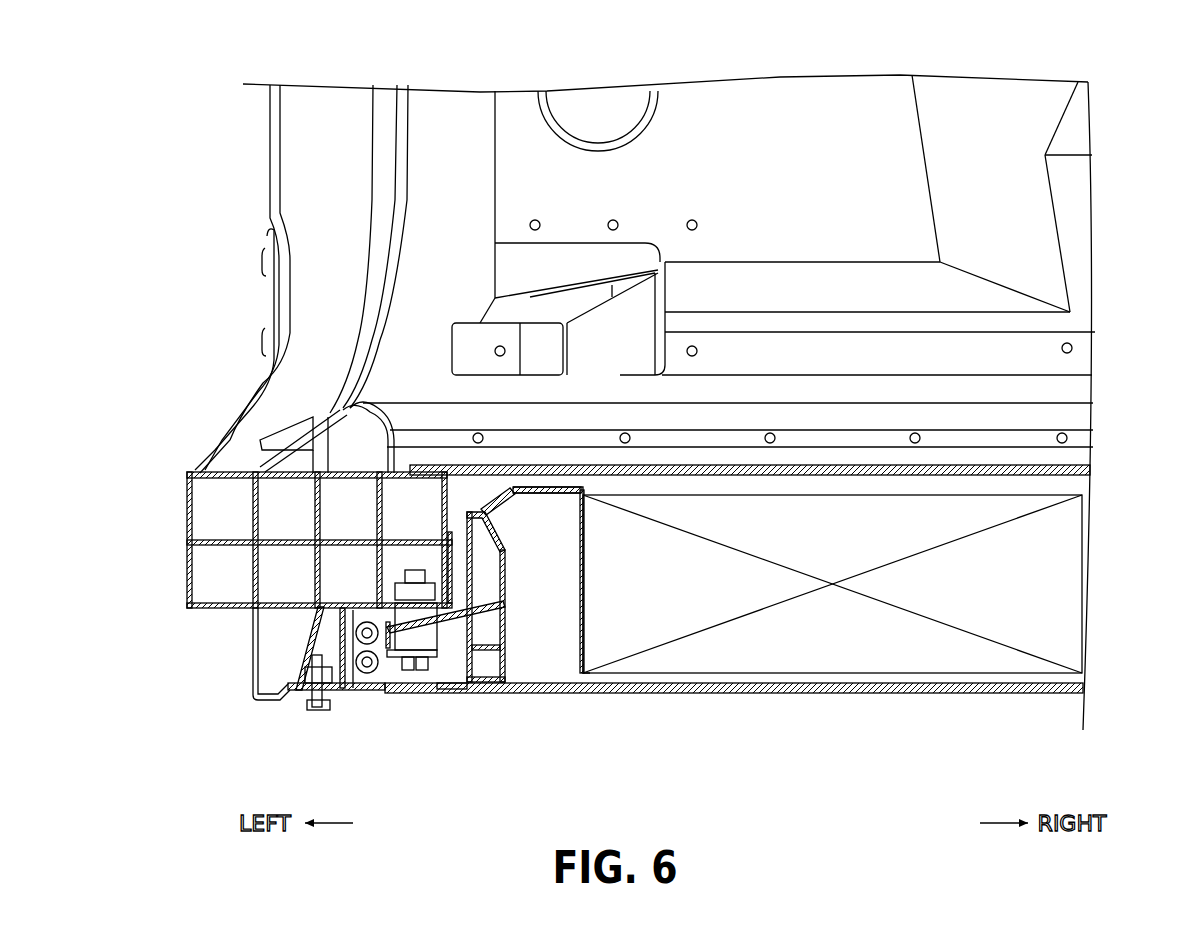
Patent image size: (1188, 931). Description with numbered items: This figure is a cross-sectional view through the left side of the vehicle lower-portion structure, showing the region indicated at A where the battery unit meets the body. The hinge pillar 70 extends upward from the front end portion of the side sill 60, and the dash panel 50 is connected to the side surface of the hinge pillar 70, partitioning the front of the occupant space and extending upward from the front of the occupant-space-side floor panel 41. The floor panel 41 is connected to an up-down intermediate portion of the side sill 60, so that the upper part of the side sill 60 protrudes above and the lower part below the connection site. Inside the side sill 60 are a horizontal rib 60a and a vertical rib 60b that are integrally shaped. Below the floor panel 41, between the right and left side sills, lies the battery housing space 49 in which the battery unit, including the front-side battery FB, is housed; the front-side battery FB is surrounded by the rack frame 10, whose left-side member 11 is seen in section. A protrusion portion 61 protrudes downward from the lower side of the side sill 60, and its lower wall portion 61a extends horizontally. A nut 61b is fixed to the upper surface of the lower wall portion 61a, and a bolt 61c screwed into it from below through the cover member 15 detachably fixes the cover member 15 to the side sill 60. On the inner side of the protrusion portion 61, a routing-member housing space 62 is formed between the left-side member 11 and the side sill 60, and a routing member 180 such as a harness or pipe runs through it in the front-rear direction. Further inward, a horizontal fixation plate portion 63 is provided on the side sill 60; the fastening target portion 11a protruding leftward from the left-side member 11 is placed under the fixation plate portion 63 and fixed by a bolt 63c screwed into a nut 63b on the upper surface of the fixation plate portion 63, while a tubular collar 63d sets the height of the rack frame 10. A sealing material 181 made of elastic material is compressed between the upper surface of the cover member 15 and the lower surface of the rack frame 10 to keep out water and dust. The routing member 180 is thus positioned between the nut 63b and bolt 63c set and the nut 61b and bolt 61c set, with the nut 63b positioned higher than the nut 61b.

The rack frame 10 is at (303, 417).
The left-side member 11 is at (508, 583).
The fastening target portion 11a is at (443, 700).
The cover member 15 is at (776, 695).
The occupant-space-side floor panel 41 is at (1058, 466).
The battery housing space 49 is at (489, 490).
The dash panel 50 is at (782, 94).
The side sill 60 is at (264, 510).
The horizontal rib 60a is at (223, 542).
The vertical rib 60b is at (250, 450).
The protrusion portion 61 is at (272, 704).
The lower wall portion 61a is at (298, 697).
The nut 61b is at (300, 646).
The bolt 61c is at (318, 712).
The routing-member housing space 62 is at (303, 598).
The fixation plate portion 63 is at (318, 616).
The nut 63b is at (393, 562).
The bolt 63c is at (408, 697).
The tubular collar 63d is at (393, 580).
The hinge pillar 70 is at (312, 170).
The routing member 180 is at (359, 692).
The sealing material 181 is at (497, 697).
The region A is at (203, 270).
The front-side battery FB is at (1060, 563).